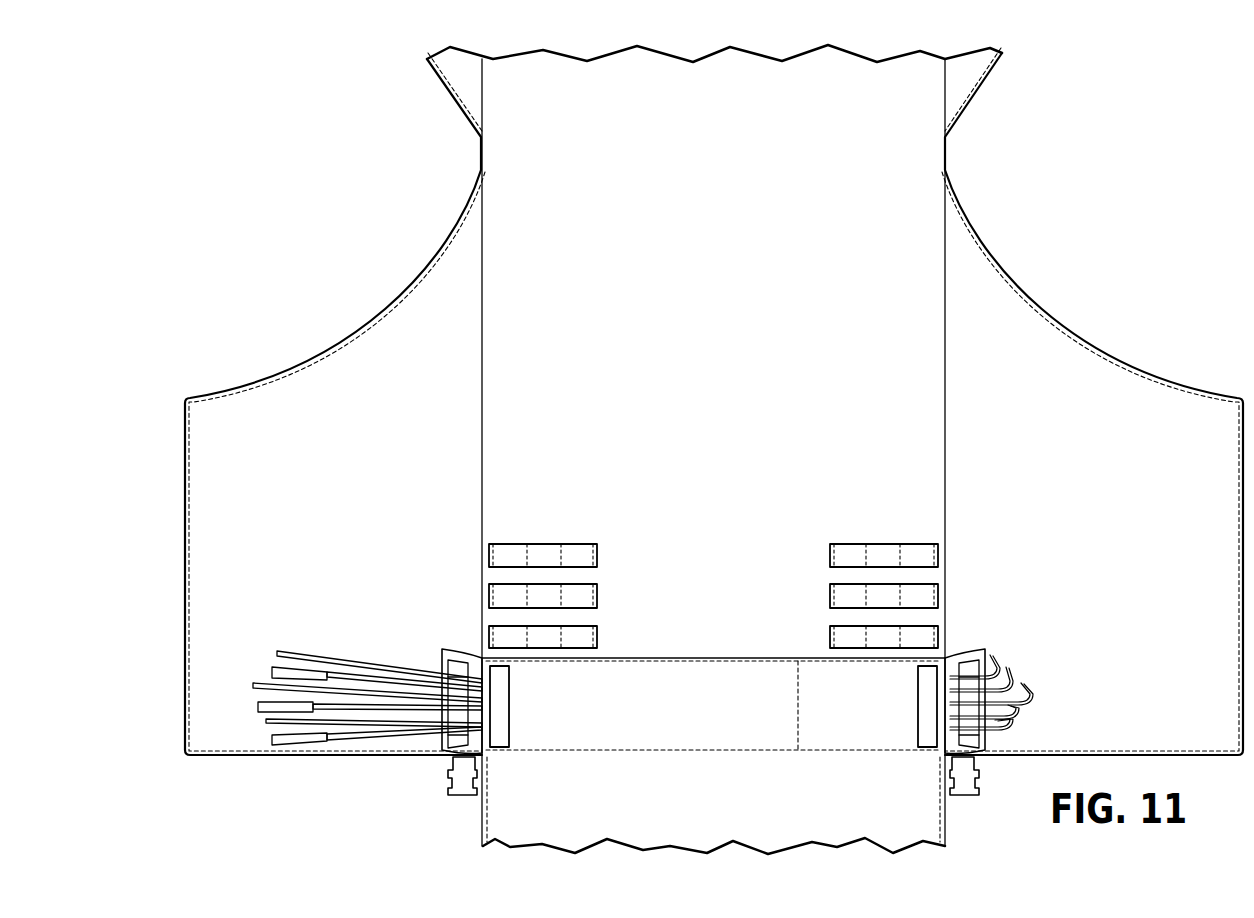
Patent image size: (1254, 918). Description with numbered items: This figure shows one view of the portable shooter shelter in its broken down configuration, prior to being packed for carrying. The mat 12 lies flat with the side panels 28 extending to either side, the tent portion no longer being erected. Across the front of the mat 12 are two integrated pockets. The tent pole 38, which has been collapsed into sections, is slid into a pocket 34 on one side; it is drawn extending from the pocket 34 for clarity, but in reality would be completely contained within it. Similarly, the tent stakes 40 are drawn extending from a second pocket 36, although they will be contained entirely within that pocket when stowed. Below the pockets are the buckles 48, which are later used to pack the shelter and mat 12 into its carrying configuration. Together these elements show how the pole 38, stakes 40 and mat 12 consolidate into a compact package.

The mat 12 is at (368, 247).
The side panels 28 is at (717, 588).
The pocket 34 is at (713, 704).
The second pocket 36 is at (896, 706).
The tent pole 38 is at (378, 663).
The tent stakes 40 is at (1033, 693).
The buckles 48 is at (460, 797).